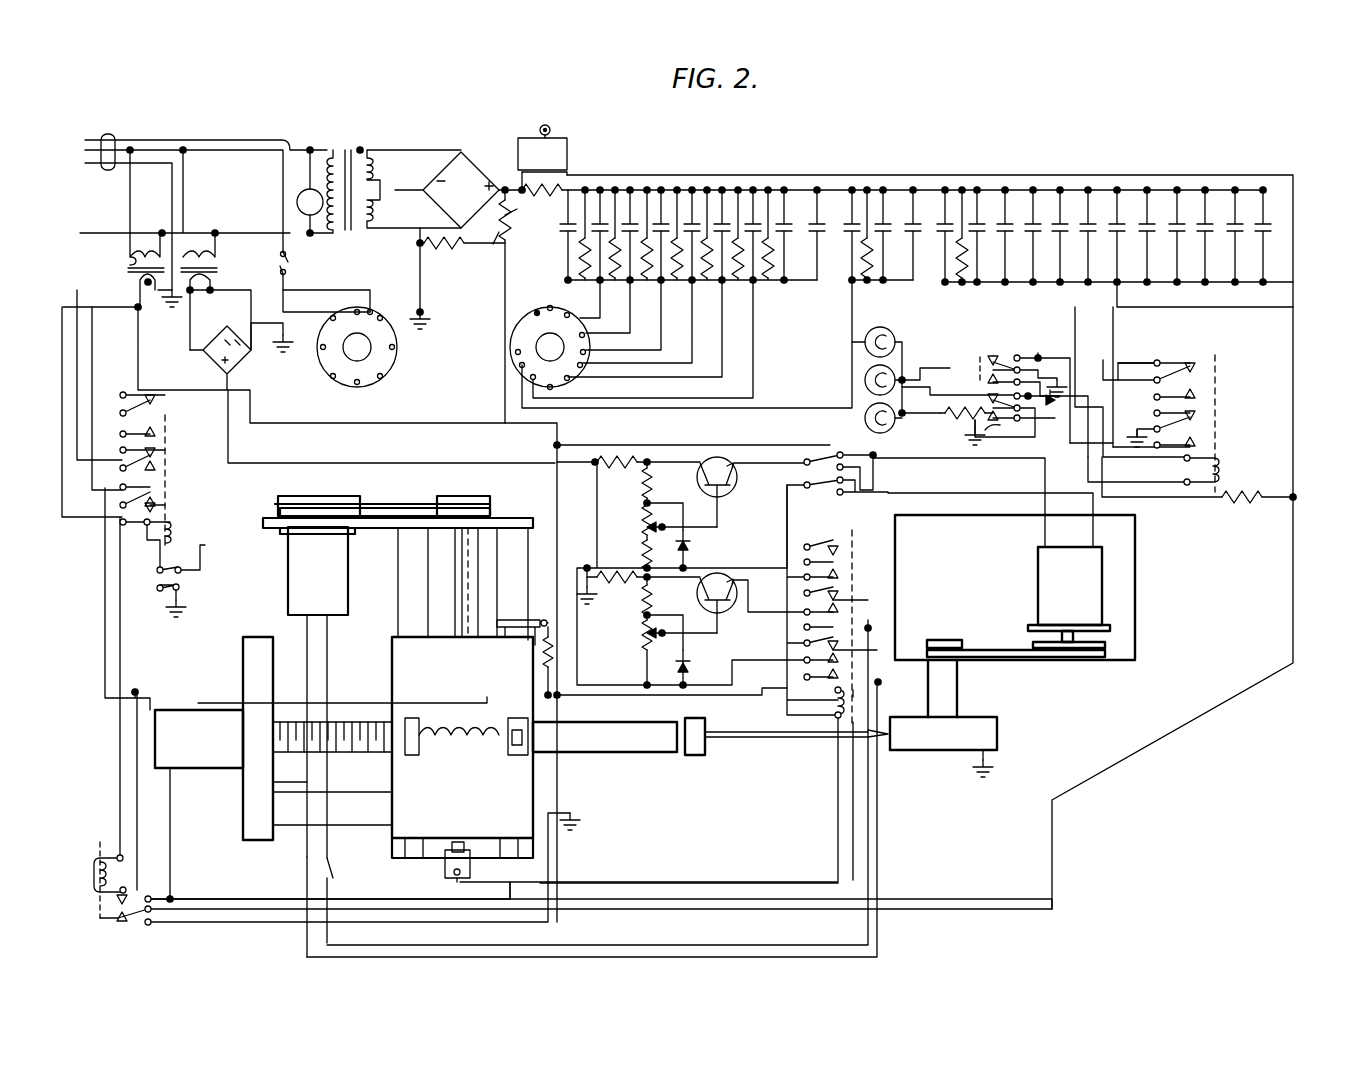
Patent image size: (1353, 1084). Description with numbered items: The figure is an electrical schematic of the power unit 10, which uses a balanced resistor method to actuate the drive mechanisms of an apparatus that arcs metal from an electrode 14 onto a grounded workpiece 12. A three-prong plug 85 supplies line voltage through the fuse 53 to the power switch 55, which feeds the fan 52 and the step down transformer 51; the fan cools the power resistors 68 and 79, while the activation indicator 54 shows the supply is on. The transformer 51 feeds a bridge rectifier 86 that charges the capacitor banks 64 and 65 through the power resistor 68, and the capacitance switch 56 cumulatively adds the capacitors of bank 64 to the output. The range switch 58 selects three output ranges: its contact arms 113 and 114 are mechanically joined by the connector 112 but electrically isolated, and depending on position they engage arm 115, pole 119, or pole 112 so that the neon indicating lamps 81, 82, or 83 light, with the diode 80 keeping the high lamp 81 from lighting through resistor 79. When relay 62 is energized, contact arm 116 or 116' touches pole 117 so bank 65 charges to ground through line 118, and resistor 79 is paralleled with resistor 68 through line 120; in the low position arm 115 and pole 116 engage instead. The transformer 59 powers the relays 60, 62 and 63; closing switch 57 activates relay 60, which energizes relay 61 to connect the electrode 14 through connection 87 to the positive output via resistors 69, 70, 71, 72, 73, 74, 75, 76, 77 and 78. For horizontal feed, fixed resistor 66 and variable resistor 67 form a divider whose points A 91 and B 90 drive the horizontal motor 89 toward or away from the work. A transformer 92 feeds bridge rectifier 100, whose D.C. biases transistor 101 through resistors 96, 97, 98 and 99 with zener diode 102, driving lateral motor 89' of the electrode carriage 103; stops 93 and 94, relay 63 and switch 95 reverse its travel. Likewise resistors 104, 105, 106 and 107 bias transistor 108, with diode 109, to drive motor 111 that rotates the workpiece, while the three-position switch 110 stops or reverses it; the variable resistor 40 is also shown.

The power unit 10 is at (1013, 130).
The workpiece 12 is at (957, 758).
The electrode 14 is at (775, 746).
The potentiometer 40 is at (515, 224).
The transformer 51 is at (346, 138).
The fan 52 is at (297, 201).
The fuse 53 is at (267, 264).
The activation indicator 54 is at (552, 125).
The power switch 55 is at (340, 386).
The capacitance switch 56 is at (520, 380).
The vibrator, arc, and horizontal motion drive switch 57 is at (155, 593).
The range switch 58 is at (1040, 355).
The transformer 59 is at (126, 262).
The relay 60 is at (172, 474).
The relay 61 is at (98, 856).
The relay 62 is at (1223, 467).
The relay 63 is at (852, 536).
The capacitor bank 64 is at (815, 226).
The capacitor bank 65 is at (1263, 228).
The resistor 66 is at (435, 246).
The resistor 67 is at (503, 222).
The power resistor 68 is at (530, 197).
The resistor 69 is at (585, 278).
The resistor 70 is at (622, 284).
The resistor 71 is at (648, 284).
The resistor 72 is at (678, 289).
The resistor 73 is at (708, 284).
The resistor 74 is at (742, 278).
The resistor 75 is at (773, 260).
The resistor 76 is at (873, 275).
The resistor 77 is at (970, 275).
The resistor 78 is at (963, 398).
The power resistor 79 is at (1237, 497).
The diode 80 is at (1050, 400).
The neon indicating lamp 81 is at (892, 336).
The neon indicating lamp 82 is at (866, 378).
The neon indicating lamp 83 is at (866, 430).
The plug 85 is at (108, 133).
The bridge rectifier 86 is at (472, 156).
The connection 87 is at (540, 746).
The horizontal drive motor 89 is at (300, 738).
The motor 89' is at (398, 677).
The point B 90 is at (157, 768).
The point A 91 is at (507, 259).
The transformer 92 is at (214, 255).
The stop 93 is at (457, 842).
The stop 94 is at (507, 632).
The switch 95 is at (333, 875).
The resistor 96 is at (650, 590).
The resistor 97 is at (643, 622).
The resistor 98 is at (633, 670).
The resistor 99 is at (548, 636).
The bridge rectifier 100 is at (238, 362).
The transistor 101 is at (728, 608).
The zener diode 102 is at (690, 660).
The electrode carriage 103 is at (533, 798).
The resistor 104 is at (624, 460).
The resistor 105 is at (625, 480).
The resistor 106 is at (645, 520).
The resistor 107 is at (645, 550).
The transistor 108 is at (726, 495).
The diode 109 is at (690, 546).
The switch 110 is at (945, 499).
The motor 111 is at (1036, 565).
The connector 112 is at (980, 378).
The contact arm 113 is at (1000, 368).
The contact arm 114 is at (1031, 425).
The arm 115 is at (1195, 370).
The contact arm 116 is at (1151, 399).
The contact arm 116' is at (1237, 404).
The pole 117 is at (1190, 442).
The line 118 is at (1117, 296).
The pole 119 is at (984, 432).
The line 120 is at (1233, 307).
The point A is at (509, 252).
The point B is at (173, 768).